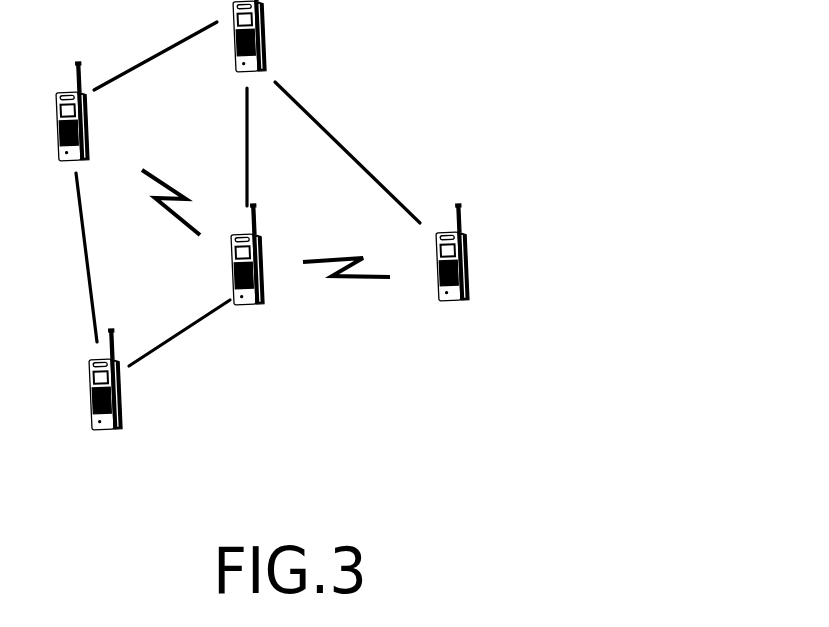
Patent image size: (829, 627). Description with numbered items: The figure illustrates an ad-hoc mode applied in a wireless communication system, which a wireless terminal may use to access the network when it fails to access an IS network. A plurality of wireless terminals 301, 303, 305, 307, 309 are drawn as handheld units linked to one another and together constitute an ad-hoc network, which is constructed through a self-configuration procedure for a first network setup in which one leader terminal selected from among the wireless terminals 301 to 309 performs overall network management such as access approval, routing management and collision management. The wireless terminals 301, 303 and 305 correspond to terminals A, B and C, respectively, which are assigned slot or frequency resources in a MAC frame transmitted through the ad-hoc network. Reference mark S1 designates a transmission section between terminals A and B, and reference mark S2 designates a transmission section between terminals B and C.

The wireless terminal 301 is at (86, 128).
The wireless terminal 303 is at (243, 306).
The wireless terminal 305 is at (445, 302).
The wireless terminal 307 is at (119, 398).
The wireless terminal 309 is at (264, 43).
The transmission section S1 is at (176, 224).
The transmission section S2 is at (360, 279).